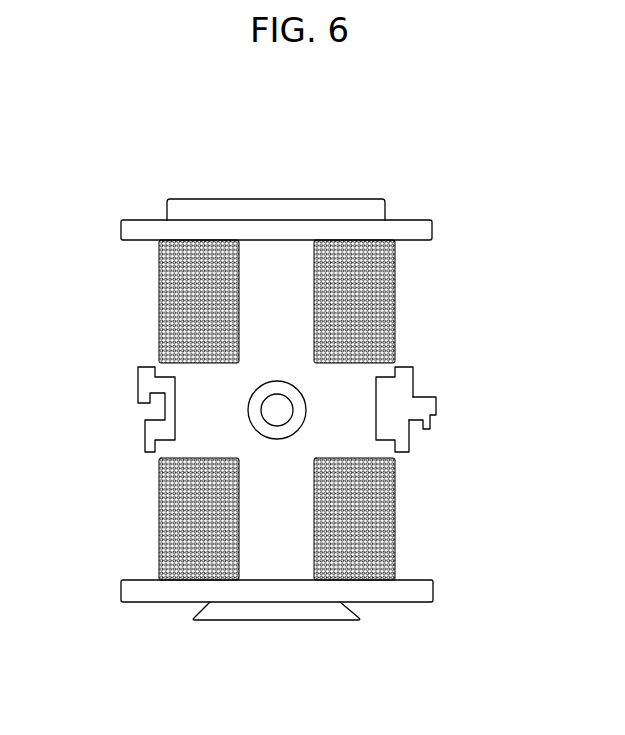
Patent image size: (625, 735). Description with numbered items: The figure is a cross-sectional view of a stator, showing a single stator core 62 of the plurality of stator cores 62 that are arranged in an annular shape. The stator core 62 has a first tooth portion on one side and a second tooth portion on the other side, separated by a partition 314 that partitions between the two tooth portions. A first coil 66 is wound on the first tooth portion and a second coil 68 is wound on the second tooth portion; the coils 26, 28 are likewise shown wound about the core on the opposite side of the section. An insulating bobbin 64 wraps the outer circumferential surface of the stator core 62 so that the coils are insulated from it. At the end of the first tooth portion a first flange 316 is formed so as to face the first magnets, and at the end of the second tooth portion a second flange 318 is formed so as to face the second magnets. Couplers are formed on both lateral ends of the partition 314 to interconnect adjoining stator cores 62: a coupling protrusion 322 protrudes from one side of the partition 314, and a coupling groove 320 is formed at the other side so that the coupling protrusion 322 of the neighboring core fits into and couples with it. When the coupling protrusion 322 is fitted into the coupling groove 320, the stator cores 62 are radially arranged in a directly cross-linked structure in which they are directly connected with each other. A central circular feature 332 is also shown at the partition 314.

The stator core 62 is at (410, 187).
The second flange 318 is at (275, 198).
The first flange 316 is at (313, 610).
The first coil 26 is at (162, 268).
The second coil 28 is at (162, 510).
The second coil 68 is at (377, 303).
The first coil 66 is at (380, 542).
The insulating bobbin 64 is at (285, 510).
The coupling groove 320 is at (163, 423).
The partition 314 is at (403, 388).
The coupling protrusion 322 is at (433, 413).
The shaft 332 is at (277, 410).